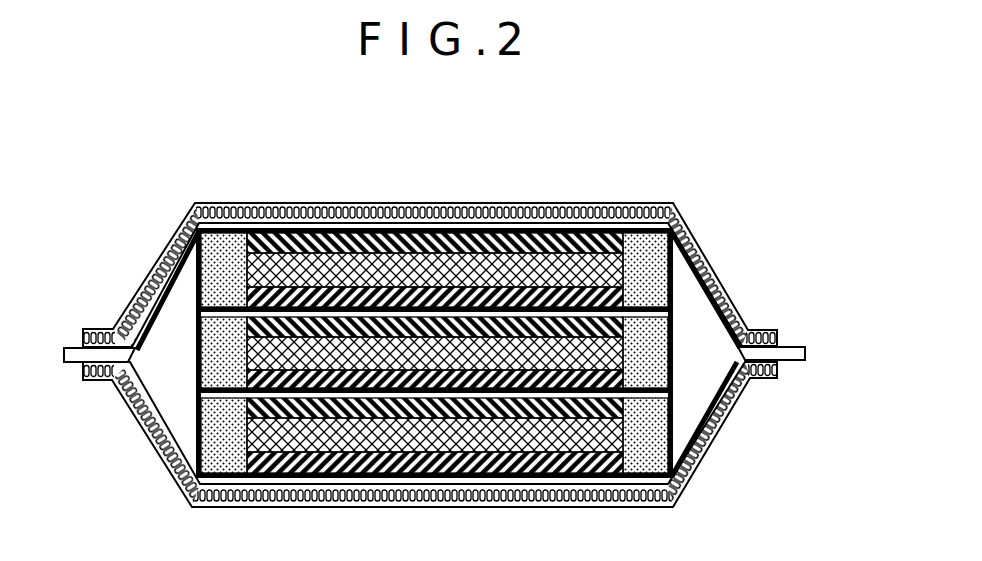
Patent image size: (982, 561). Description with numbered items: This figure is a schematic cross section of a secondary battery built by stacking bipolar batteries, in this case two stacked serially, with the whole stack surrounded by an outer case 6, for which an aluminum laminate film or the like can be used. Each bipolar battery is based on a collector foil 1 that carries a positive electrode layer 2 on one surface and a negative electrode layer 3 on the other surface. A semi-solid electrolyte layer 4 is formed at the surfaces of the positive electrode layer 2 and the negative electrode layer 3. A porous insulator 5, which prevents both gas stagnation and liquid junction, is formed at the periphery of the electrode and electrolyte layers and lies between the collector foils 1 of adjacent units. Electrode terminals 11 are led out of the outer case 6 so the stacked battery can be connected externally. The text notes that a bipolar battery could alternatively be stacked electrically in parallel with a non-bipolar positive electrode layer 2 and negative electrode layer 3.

The collector foil 1 is at (657, 392).
The positive electrode layer 2 is at (623, 373).
The negative electrode layer 3 is at (623, 410).
The semi-solid electrolyte layer 4 is at (627, 350).
The porous insulator 5 is at (213, 238).
The outer case 6 is at (295, 205).
The electrode terminals 11 is at (793, 349).